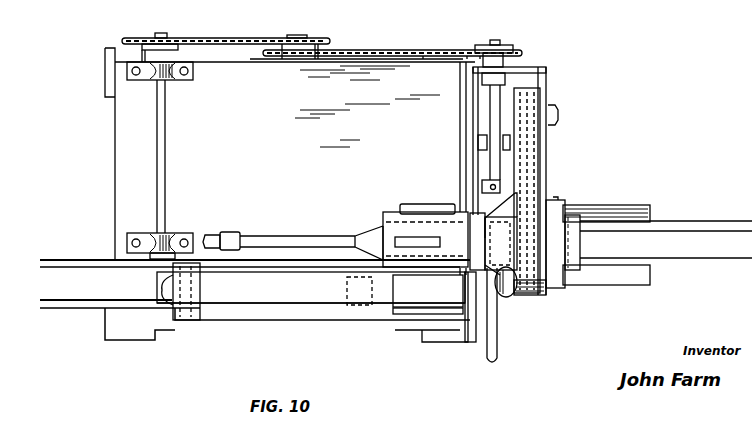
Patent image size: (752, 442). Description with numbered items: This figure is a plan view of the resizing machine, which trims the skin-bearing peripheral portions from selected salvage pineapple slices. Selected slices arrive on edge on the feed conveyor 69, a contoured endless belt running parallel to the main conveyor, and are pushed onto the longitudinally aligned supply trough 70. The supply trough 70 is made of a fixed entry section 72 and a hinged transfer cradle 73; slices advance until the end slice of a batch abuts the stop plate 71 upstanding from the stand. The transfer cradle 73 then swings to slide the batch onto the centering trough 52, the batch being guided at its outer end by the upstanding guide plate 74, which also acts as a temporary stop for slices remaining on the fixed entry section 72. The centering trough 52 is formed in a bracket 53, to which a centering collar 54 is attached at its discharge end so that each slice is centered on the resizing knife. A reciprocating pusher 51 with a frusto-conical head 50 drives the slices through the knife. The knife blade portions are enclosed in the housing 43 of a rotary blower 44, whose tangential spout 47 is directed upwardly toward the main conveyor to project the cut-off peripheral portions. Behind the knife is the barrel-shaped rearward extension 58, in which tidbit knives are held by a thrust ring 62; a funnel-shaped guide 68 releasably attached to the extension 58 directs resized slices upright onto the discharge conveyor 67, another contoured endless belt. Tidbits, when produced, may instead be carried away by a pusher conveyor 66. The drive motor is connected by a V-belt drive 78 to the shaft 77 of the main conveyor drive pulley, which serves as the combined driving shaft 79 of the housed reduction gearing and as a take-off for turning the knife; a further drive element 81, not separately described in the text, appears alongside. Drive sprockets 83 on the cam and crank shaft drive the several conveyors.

The V-belt drive 78 is at (237, 31).
The drive sprockets 83 is at (263, 52).
The toothed rack 81 is at (522, 95).
The combined driving shaft 79 is at (495, 158).
The feed conveyor 69 is at (60, 260).
The supply trough 70 is at (284, 293).
The fixed entry section 72 is at (217, 293).
The transfer cradle 73 is at (417, 295).
The guide plate 74 is at (395, 320).
The pusher conveyor 66 is at (441, 326).
The stop plate 71 is at (466, 284).
The shaft 77 is at (498, 343).
The tangential spout 47 is at (506, 297).
The reciprocating pusher 51 is at (292, 235).
The centering trough 52 is at (385, 212).
The bracket 53 is at (424, 204).
The pusher head 50 is at (383, 256).
The centering collar 54 is at (472, 243).
The rotary blower 44 is at (501, 246).
The blower housing 43 is at (509, 213).
The funnel-shaped guide 68 is at (597, 205).
The thrust ring 62 is at (581, 243).
The discharge conveyor 67 is at (694, 247).
The rearward extension 58 is at (573, 272).